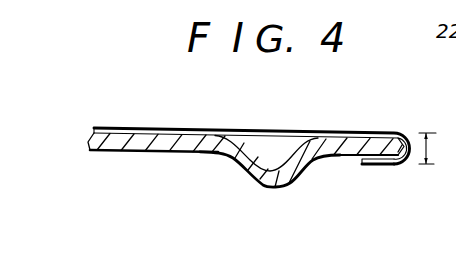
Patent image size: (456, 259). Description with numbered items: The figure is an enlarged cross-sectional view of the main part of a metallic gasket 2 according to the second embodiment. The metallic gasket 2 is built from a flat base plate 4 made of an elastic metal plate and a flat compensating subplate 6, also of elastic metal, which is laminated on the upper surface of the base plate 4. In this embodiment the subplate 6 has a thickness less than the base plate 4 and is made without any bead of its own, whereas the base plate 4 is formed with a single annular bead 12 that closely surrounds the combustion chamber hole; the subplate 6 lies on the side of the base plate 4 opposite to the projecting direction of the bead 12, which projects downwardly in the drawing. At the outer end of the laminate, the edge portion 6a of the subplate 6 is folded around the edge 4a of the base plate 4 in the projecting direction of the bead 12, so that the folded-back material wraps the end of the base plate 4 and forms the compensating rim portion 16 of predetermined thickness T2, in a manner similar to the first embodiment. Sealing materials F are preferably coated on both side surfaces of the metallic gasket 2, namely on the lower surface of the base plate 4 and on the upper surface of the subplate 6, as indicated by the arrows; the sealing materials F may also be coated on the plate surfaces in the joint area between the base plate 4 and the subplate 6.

The metallic gasket 2 is at (147, 112).
The base plate 4 is at (181, 150).
The edge 4a is at (376, 131).
The subplate 6 is at (169, 128).
The edge portion 6a is at (363, 164).
The annular bead 12 is at (267, 180).
The compensating rim portion 16 is at (413, 176).
The sealing materials F is at (124, 126).
The predetermined thickness T2 is at (436, 148).